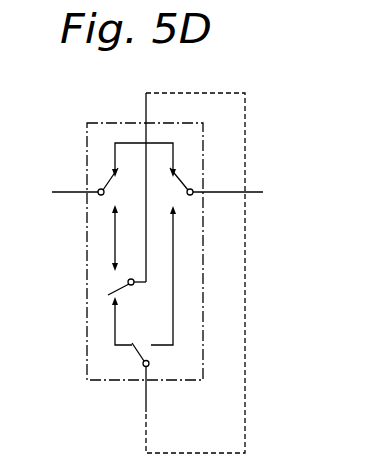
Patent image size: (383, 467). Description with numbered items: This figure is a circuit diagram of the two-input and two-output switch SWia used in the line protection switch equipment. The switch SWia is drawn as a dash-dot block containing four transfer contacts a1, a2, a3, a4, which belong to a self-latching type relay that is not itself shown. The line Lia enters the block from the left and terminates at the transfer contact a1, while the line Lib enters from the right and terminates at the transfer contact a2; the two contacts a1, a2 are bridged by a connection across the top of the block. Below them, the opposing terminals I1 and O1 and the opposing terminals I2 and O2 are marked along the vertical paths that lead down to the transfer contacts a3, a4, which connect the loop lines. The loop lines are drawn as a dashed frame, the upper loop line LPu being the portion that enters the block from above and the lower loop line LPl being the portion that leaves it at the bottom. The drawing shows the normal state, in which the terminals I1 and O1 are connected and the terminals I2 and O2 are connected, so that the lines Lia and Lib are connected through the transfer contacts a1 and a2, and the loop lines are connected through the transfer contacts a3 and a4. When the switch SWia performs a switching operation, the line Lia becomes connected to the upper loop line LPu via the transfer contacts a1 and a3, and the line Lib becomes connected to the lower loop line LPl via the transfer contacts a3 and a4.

The two-input and two-output switch SWia is at (90, 122).
The upper loop line LPu is at (170, 93).
The lower loop line LPl is at (143, 406).
The line Lia is at (69, 181).
The line Lib is at (228, 181).
The transfer contact a1 is at (100, 189).
The transfer contact a2 is at (191, 189).
The transfer contact a3 is at (118, 280).
The transfer contact a4 is at (152, 363).
The terminal I1 is at (98, 217).
The terminal O1 is at (192, 217).
The terminal O2 is at (138, 302).
The terminal I2 is at (115, 368).